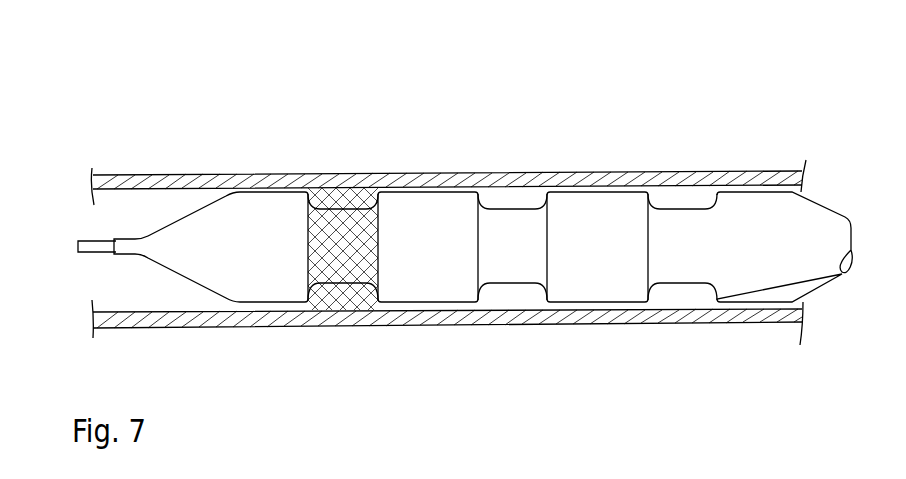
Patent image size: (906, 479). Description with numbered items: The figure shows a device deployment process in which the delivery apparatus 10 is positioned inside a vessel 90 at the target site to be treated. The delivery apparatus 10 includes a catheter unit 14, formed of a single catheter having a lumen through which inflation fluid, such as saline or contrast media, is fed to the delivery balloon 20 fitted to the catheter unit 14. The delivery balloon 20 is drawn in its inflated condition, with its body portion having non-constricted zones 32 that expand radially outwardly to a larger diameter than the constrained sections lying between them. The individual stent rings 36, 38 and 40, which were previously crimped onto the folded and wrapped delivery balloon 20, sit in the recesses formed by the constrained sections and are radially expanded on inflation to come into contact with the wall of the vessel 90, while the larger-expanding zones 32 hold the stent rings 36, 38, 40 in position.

The delivery apparatus 10 is at (768, 100).
The catheter unit 14 is at (93, 253).
The delivery balloon 20 is at (233, 290).
The non-constricted zones 32 is at (218, 200).
The stent ring 36 is at (332, 300).
The stent ring 38 is at (508, 304).
The stent ring 40 is at (684, 302).
The vessel 90 is at (447, 170).